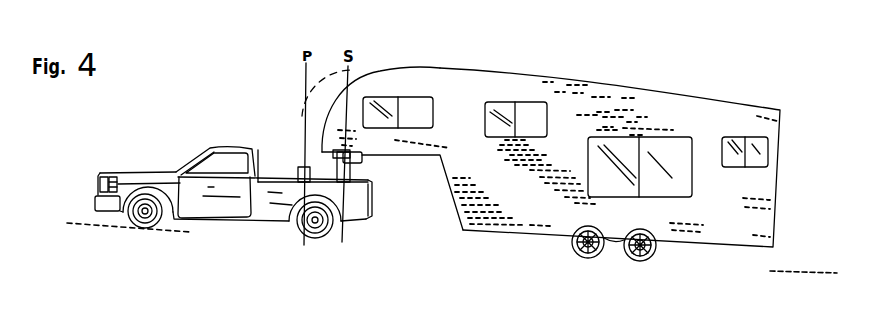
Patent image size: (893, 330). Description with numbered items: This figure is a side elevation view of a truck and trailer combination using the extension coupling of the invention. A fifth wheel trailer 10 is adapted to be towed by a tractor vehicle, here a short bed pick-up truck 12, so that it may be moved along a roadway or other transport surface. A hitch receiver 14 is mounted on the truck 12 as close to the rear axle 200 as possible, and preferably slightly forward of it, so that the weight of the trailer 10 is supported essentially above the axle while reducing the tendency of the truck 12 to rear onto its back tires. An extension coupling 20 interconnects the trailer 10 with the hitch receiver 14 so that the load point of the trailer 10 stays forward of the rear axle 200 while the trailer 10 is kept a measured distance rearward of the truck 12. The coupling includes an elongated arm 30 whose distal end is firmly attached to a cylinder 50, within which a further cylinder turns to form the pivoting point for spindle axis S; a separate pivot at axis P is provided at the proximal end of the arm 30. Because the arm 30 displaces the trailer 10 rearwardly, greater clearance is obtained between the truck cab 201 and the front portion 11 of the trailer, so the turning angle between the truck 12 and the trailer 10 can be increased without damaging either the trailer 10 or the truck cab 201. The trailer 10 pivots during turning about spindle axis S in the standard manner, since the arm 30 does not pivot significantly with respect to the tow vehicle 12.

The fifth wheel trailer 10 is at (482, 67).
The front portion of the trailer 11 is at (387, 72).
The short bed pick-up truck 12 is at (135, 168).
The hitch receiver 14 is at (290, 173).
The extension coupling 20 is at (400, 163).
The elongated arm 30 is at (323, 167).
The cylinder 50 is at (293, 158).
The rear axle 200 is at (318, 233).
The truck cab 201 is at (230, 145).